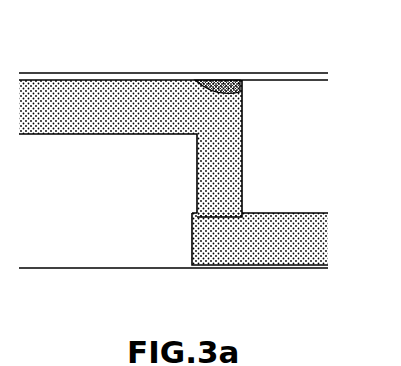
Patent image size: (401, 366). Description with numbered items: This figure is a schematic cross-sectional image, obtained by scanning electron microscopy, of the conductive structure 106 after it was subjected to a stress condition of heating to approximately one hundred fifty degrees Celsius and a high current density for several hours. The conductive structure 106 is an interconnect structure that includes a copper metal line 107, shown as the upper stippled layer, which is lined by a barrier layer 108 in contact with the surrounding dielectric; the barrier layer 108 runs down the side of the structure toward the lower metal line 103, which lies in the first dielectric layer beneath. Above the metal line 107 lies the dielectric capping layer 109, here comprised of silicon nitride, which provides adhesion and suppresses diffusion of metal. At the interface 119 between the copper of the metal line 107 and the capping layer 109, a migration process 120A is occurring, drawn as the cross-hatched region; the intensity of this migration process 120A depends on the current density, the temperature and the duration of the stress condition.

The metal line 103 is at (298, 250).
The conductive structure 106 is at (274, 177).
The metal line 107 is at (92, 97).
The barrier layer 108 is at (242, 123).
The dielectric capping layer 109 is at (150, 78).
The interface 119 is at (58, 81).
The migration process 120A is at (220, 82).